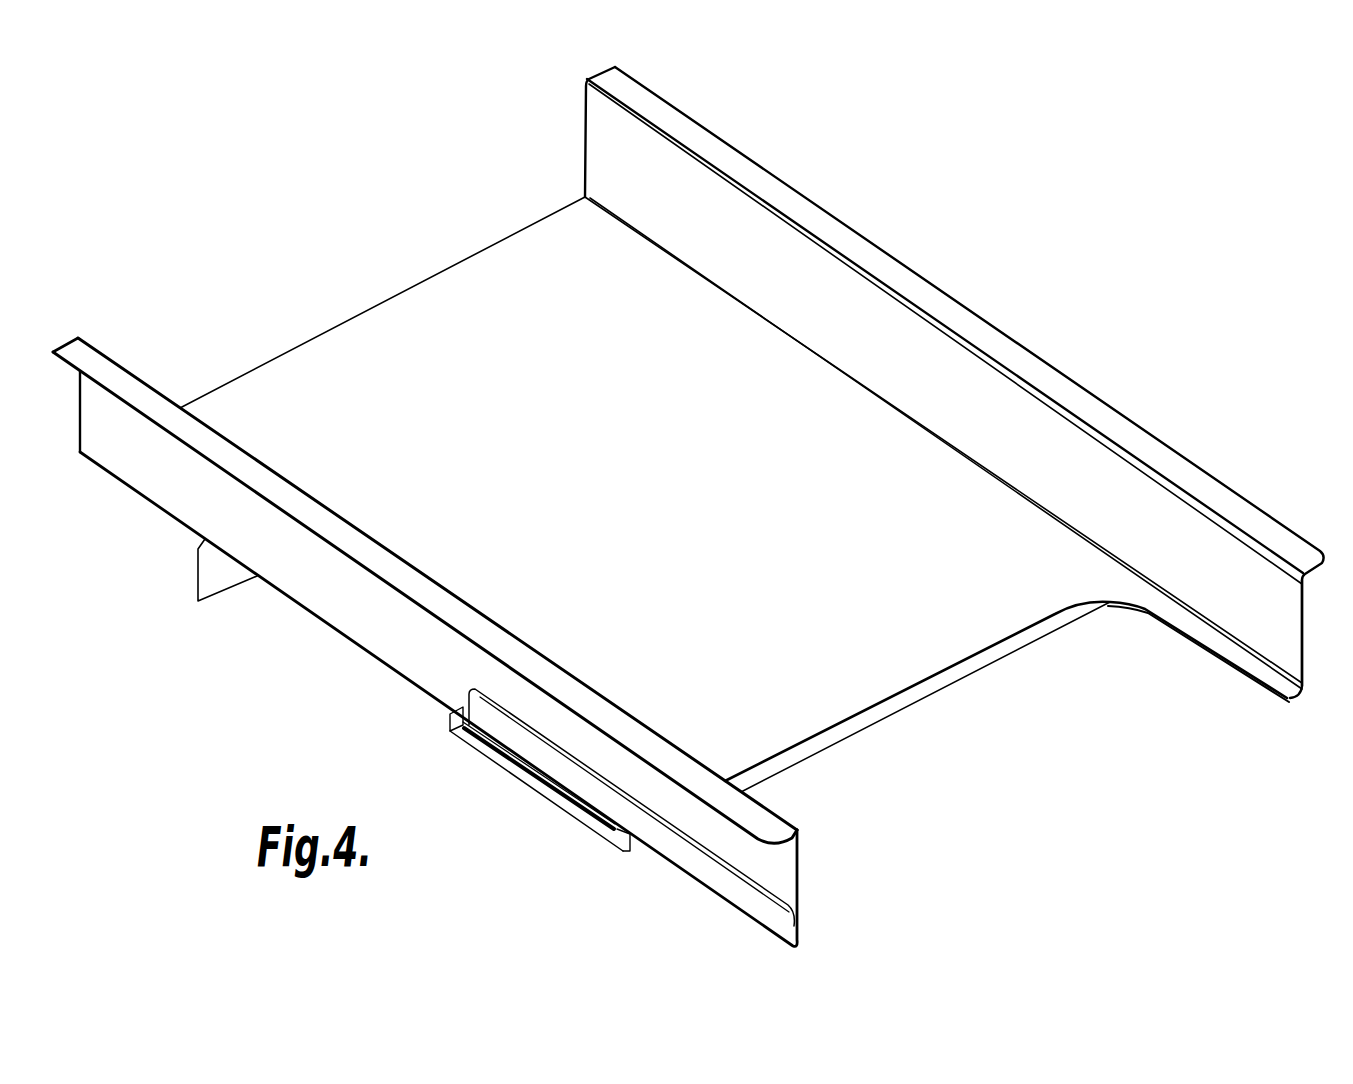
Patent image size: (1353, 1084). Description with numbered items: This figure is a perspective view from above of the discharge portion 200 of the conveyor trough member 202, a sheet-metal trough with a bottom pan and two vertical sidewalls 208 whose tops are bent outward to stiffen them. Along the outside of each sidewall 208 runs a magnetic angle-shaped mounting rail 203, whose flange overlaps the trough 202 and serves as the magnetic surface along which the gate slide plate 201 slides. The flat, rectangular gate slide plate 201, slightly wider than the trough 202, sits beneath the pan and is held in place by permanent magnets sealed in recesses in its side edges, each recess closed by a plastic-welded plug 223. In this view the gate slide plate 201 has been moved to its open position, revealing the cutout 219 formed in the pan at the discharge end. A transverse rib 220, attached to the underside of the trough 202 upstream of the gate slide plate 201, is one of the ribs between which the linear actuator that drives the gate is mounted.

The discharge portion 200 is at (1082, 300).
The gate slide plate 201 is at (958, 682).
The conveyor trough member 202 is at (672, 492).
The mounting rail 203 is at (457, 719).
The vertical sidewall 208 is at (1217, 553).
The cutout 219 is at (1052, 681).
The transverse rib 220 is at (222, 582).
The plug 223 is at (537, 782).